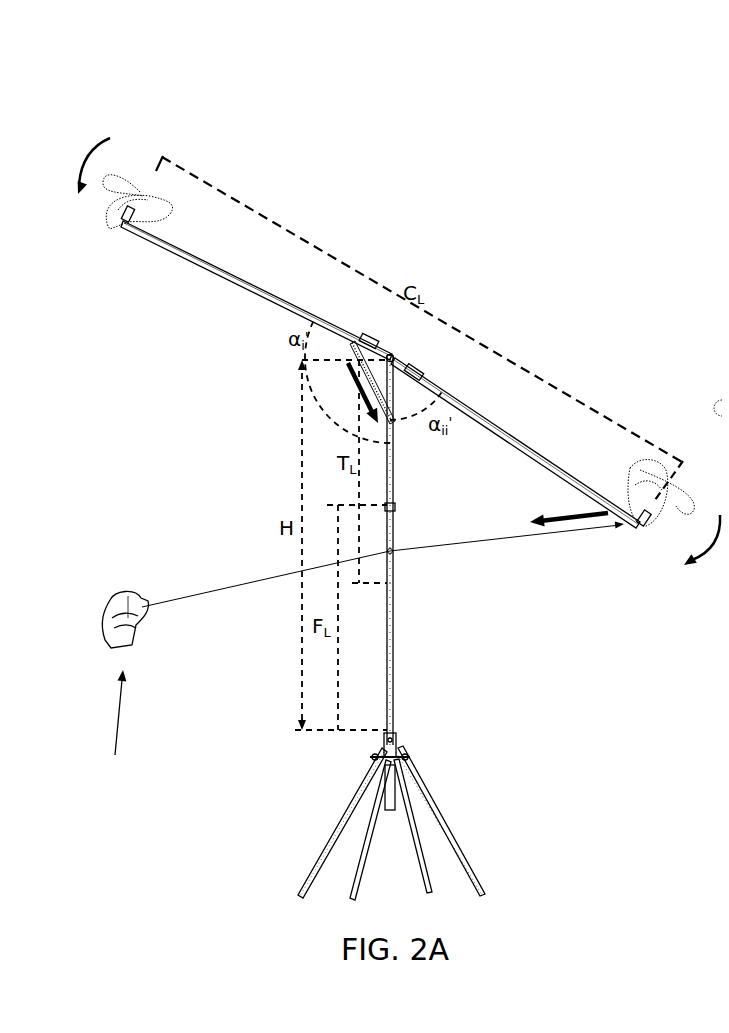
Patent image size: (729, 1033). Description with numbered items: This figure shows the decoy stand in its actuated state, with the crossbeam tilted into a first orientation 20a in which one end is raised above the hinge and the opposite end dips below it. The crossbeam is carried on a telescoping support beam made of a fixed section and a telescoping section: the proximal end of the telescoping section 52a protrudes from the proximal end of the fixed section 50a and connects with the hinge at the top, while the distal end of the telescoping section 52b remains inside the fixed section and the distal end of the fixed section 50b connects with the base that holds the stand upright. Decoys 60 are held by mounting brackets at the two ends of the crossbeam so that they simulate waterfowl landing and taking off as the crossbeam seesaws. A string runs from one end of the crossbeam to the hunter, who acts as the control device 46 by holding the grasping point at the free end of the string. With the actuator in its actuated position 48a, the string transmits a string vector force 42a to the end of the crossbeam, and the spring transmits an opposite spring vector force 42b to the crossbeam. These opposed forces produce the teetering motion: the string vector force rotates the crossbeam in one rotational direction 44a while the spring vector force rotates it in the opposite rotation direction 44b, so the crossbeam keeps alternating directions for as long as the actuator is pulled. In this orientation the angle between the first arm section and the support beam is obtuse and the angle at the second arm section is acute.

The first orientation 20a is at (272, 172).
The string vector force 42a is at (572, 513).
The spring vector force 42b is at (346, 365).
The rotational direction 44a is at (707, 550).
The opposite rotation direction 44b is at (93, 150).
The control device 46 is at (120, 608).
The actuated position 48a is at (114, 725).
The proximal end of the fixed section 50a is at (390, 507).
The distal end of the fixed section 50b is at (393, 733).
The proximal end of the telescoping section 52a is at (393, 356).
The distal end of the telescoping section 52b is at (390, 583).
The decoy 60 is at (132, 193).